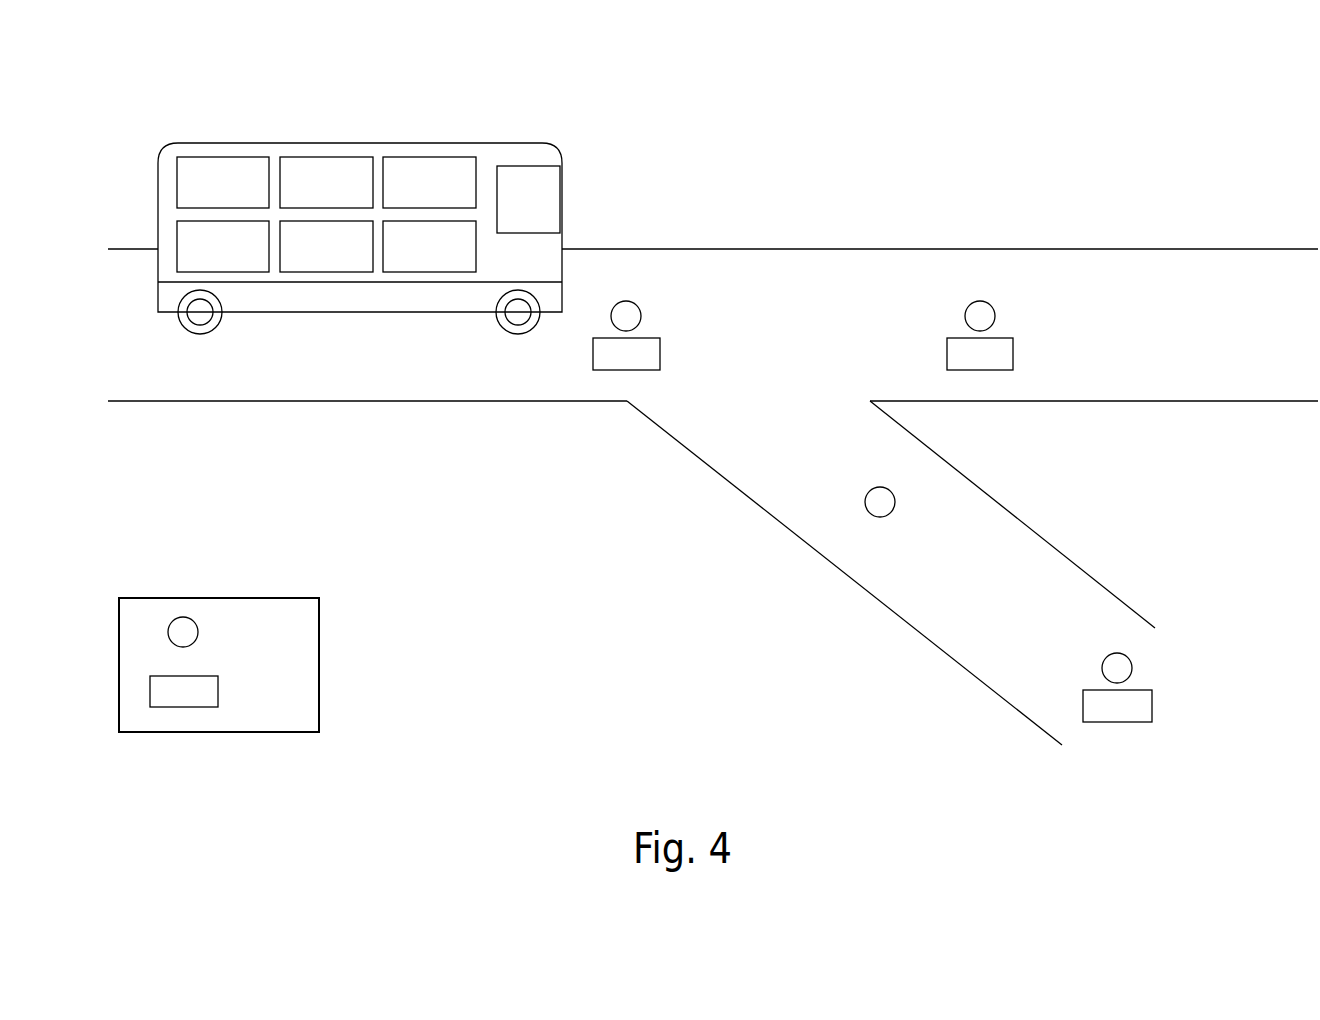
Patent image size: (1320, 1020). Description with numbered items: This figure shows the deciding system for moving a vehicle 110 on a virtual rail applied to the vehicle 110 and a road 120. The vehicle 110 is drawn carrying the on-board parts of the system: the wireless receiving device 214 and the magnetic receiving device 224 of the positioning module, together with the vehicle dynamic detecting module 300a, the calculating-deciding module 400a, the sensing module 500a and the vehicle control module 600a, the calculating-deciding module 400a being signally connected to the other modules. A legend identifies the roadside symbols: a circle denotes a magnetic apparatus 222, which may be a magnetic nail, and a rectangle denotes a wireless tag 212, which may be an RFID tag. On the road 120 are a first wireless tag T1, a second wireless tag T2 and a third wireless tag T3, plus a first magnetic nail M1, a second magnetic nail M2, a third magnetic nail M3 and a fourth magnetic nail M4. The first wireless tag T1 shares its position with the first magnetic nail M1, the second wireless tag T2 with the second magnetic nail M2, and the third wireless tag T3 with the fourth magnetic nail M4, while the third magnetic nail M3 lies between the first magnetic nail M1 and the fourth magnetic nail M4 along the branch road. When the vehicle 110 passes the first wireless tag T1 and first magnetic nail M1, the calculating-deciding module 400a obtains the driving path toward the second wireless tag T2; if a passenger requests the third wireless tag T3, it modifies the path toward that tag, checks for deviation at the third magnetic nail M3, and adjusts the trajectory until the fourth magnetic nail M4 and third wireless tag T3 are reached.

The vehicle 110 is at (503, 143).
The road 120 is at (1175, 250).
The wireless receiving device 214 is at (223, 182).
The magnetic receiving device 224 is at (326, 182).
The sensing module 500a is at (429, 182).
The vehicle dynamic detecting module 300a is at (223, 246).
The calculating-deciding module 400a is at (326, 246).
The vehicle control module 600a is at (429, 246).
The first magnetic nail M1 is at (637, 306).
The second magnetic nail M2 is at (991, 306).
The third magnetic nail M3 is at (883, 517).
The fourth magnetic nail M4 is at (1128, 657).
The first wireless tag T1 is at (660, 354).
The second wireless tag T2 is at (1013, 352).
The third wireless tag T3 is at (1152, 704).
The magnetic apparatus 222 is at (225, 632).
The wireless tag 212 is at (216, 694).